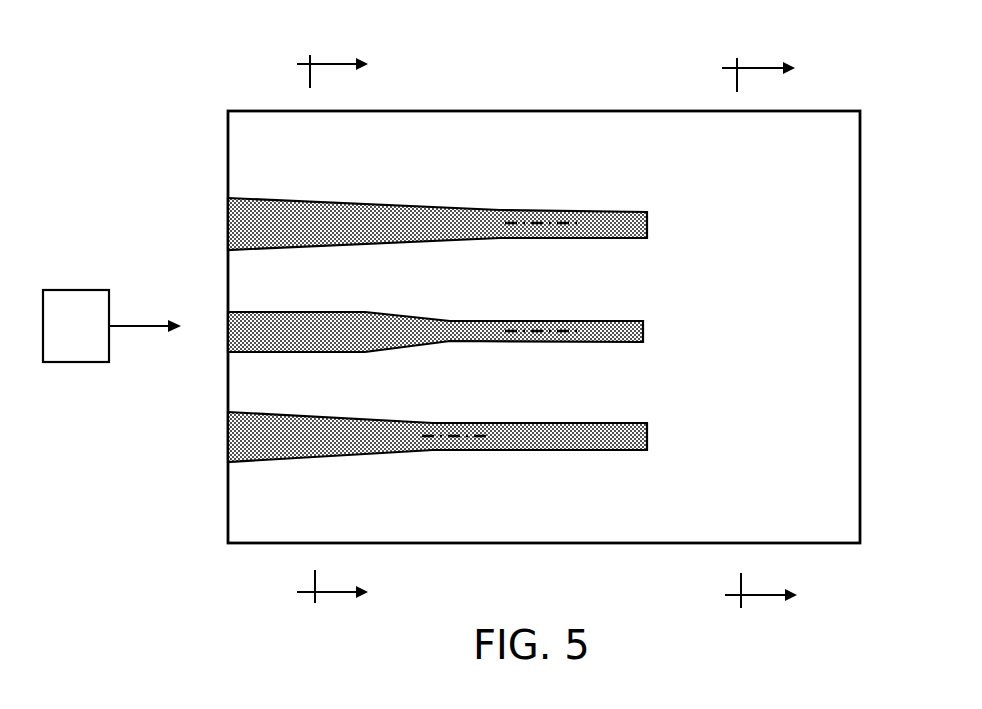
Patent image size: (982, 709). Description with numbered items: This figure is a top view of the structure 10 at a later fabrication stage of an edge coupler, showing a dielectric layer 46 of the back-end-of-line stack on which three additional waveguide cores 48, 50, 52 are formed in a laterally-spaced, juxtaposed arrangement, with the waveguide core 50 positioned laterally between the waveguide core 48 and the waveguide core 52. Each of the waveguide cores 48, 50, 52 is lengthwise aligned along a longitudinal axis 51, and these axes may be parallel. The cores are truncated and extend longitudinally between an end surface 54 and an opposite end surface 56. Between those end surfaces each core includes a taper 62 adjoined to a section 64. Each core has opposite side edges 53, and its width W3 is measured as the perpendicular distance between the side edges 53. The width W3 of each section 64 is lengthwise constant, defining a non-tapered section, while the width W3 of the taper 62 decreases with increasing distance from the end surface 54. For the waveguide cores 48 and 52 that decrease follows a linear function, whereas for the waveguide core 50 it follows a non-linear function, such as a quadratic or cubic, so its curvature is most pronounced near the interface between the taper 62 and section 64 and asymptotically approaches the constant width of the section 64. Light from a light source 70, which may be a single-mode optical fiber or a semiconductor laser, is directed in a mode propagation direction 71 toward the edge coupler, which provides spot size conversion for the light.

The assembly 10 is at (190, 60).
The dielectric layer 46 is at (272, 498).
The waveguide core 48 is at (632, 183).
The waveguide core 50 is at (631, 297).
The waveguide core 52 is at (640, 465).
The longitudinal axis 51 is at (541, 221).
The side edges 53 is at (378, 312).
The end surface 54 is at (228, 220).
The end surface 56 is at (647, 223).
The taper 62 is at (330, 222).
The section 64 is at (475, 218).
The width W3 is at (391, 297).
The light source 70 is at (76, 326).
The mode propagation direction 71 is at (148, 322).